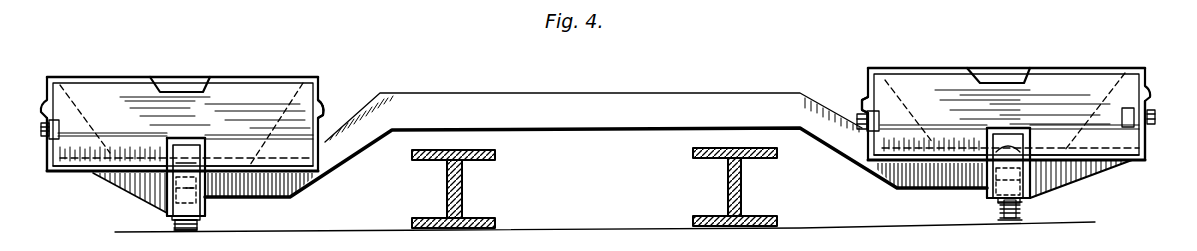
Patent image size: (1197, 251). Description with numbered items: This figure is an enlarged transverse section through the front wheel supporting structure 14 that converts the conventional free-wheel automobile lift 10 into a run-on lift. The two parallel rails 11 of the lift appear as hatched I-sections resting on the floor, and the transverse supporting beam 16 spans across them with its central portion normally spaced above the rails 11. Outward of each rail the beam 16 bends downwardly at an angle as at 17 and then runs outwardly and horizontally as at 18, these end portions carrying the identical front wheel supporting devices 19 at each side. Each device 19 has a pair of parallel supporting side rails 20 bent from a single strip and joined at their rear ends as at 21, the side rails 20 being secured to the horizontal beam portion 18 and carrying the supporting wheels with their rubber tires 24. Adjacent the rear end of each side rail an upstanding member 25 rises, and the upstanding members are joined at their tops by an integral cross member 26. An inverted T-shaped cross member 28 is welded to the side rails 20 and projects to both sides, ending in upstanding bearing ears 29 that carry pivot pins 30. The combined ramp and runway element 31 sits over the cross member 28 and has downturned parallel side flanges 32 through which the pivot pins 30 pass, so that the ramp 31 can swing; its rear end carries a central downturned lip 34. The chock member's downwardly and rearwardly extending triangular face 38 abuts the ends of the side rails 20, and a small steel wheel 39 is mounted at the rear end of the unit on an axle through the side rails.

The free-wheel automobile lift 10 is at (502, 228).
The parallel rails 11 is at (465, 182).
The front wheel supporting structure 14 is at (259, 62).
The transverse supporting beam 16 is at (500, 93).
The downwardly angled portion of supporting beam 17 is at (345, 160).
The horizontal end portion of supporting beam 18 is at (295, 198).
The front wheel supporting device 19 is at (93, 74).
The supporting side rails 20 is at (1050, 192).
The connected rear ends of side rails 21 is at (206, 201).
The rubber tire 24 is at (190, 230).
The upstanding member 25 is at (166, 152).
The cross member 26 is at (198, 137).
The inverted T-shaped cross member 28 is at (84, 170).
The upstanding bearing ears 29 is at (50, 155).
The pivot pins 30 is at (41, 130).
The combined ramp and runway element 31 is at (299, 75).
The downturned side flanges 32 is at (323, 92).
The downturned lip 34 is at (192, 88).
The downwardly and rearwardly extending face of chock member 38 is at (598, 122).
The small wheel 39 is at (172, 218).